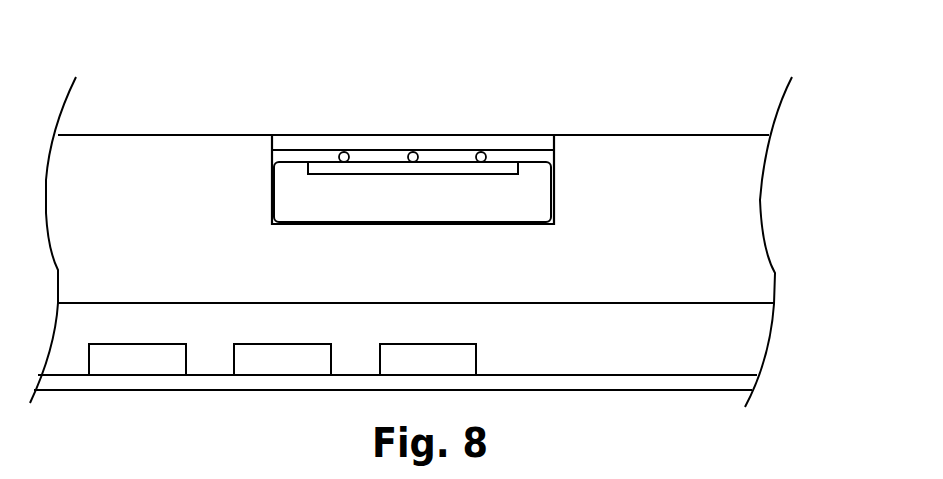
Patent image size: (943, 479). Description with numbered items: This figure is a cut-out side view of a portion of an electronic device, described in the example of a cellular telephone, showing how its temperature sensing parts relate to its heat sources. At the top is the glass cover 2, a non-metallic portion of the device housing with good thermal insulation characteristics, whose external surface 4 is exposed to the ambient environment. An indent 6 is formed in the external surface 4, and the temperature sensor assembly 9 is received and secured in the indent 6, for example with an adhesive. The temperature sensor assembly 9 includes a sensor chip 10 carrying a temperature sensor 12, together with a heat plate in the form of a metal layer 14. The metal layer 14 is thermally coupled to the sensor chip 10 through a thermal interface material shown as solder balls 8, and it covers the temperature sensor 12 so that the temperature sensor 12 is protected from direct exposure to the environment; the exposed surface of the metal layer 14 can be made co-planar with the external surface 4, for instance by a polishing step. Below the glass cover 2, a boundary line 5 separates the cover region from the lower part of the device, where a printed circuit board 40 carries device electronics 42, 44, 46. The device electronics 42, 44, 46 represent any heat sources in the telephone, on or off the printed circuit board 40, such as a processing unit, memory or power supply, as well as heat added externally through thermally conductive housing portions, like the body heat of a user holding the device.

The glass cover 2 is at (751, 193).
The external surface 4 is at (600, 135).
The intermediate layer boundary 5 is at (749, 304).
The indent 6 is at (526, 225).
The solder balls 8 is at (481, 152).
The temperature sensor assembly 9 is at (417, 91).
The sensor chip 10 is at (538, 183).
The temperature sensor 12 is at (445, 168).
The metal layer 14 is at (525, 135).
The printed circuit board 40 is at (743, 383).
The device electronics 42 is at (125, 367).
The device electronics 44 is at (270, 367).
The device electronics 46 is at (416, 367).